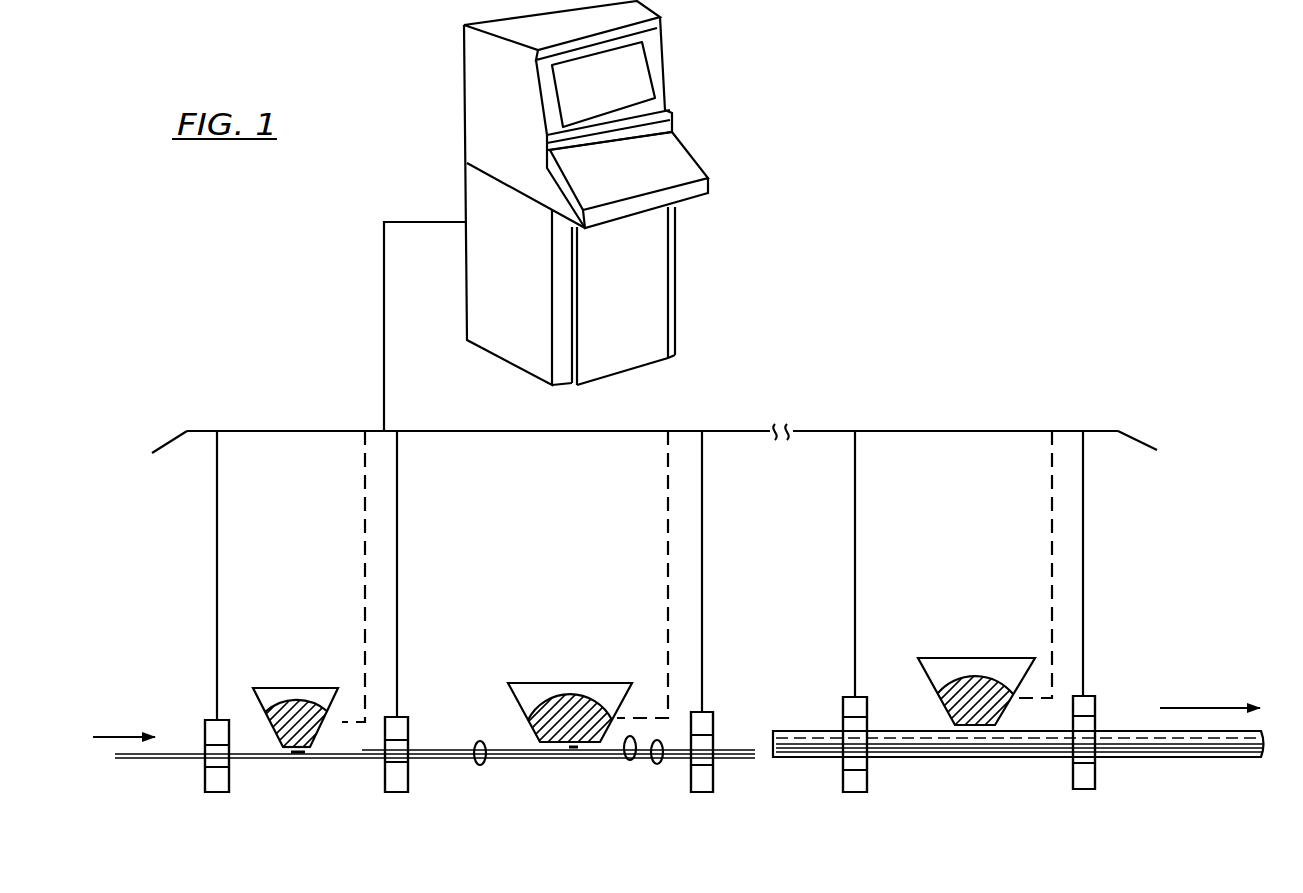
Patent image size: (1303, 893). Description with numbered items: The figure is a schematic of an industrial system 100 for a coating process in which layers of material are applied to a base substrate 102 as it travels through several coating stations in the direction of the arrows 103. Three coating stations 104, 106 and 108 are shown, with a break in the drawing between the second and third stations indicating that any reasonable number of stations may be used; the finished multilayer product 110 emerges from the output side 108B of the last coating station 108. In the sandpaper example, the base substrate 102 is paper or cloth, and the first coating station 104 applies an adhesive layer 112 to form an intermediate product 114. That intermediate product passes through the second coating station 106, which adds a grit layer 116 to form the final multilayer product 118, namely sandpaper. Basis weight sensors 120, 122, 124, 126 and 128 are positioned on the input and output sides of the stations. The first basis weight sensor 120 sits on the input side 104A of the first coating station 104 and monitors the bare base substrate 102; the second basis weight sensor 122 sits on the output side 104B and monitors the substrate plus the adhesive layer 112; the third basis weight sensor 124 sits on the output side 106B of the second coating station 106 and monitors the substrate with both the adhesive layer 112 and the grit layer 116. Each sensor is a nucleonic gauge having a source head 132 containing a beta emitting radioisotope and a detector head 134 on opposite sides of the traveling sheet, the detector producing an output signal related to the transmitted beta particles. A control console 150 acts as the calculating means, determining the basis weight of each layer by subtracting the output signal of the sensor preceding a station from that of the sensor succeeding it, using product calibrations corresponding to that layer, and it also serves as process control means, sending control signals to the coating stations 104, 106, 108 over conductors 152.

The industrial system 100 is at (933, 195).
The base substrate 102 is at (172, 760).
The arrows 103 is at (122, 737).
The first coating station 104 is at (297, 688).
The input side of the first coating station 104A is at (262, 734).
The output side of the first coating station 104B is at (316, 744).
The second coating station 106 is at (565, 683).
The output side of the second coating station 106B is at (612, 733).
The third coating station 108 is at (975, 658).
The output side of the last coating station 108B is at (1010, 713).
The multilayer product 110 is at (1240, 757).
The adhesive layer 112 is at (365, 747).
The intermediate product 114 is at (480, 765).
The grit layer 116 is at (628, 760).
The final multilayer product 118 is at (657, 763).
The first basis weight sensor 120 is at (202, 708).
The second basis weight sensor 122 is at (415, 700).
The third basis weight sensor 124 is at (717, 690).
The basis weight sensor 126 is at (828, 778).
The basis weight sensor 128 is at (1117, 653).
The source head 132 is at (218, 793).
The detector head 134 is at (232, 733).
The control console 150 is at (676, 280).
The conductors 152 is at (363, 497).